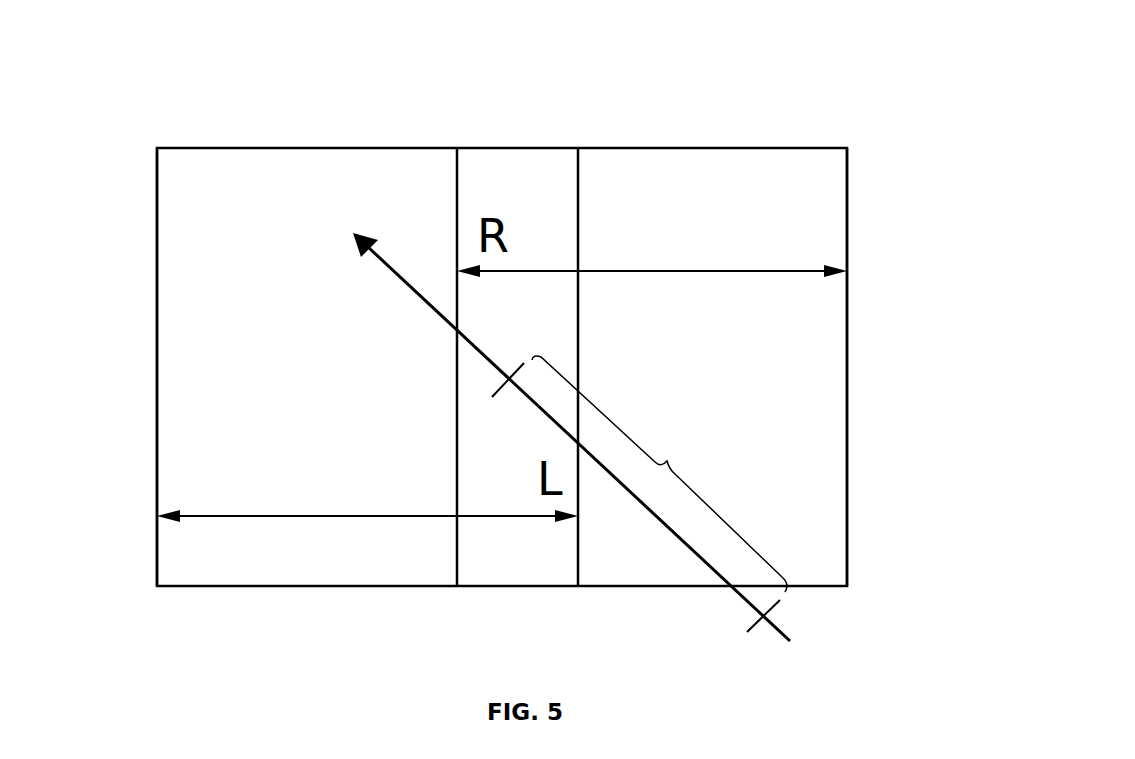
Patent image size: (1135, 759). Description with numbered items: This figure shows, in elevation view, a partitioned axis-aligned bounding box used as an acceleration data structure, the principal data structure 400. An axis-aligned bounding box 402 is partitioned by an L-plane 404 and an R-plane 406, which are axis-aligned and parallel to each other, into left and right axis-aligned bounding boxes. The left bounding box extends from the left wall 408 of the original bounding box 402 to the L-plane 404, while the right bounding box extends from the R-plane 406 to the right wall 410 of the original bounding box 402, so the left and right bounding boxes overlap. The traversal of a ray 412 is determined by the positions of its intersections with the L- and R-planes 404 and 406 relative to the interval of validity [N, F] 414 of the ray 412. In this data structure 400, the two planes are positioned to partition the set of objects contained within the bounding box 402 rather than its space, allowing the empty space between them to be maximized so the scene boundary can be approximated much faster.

The principal data structure 400 is at (702, 52).
The axis-aligned bounding box 402 is at (232, 200).
The L-plane 404 is at (582, 187).
The R-plane 406 is at (457, 187).
The left wall 408 is at (157, 337).
The right wall 410 is at (847, 408).
The ray 412 is at (680, 540).
The interval of validity [N, F] 414 is at (659, 474).